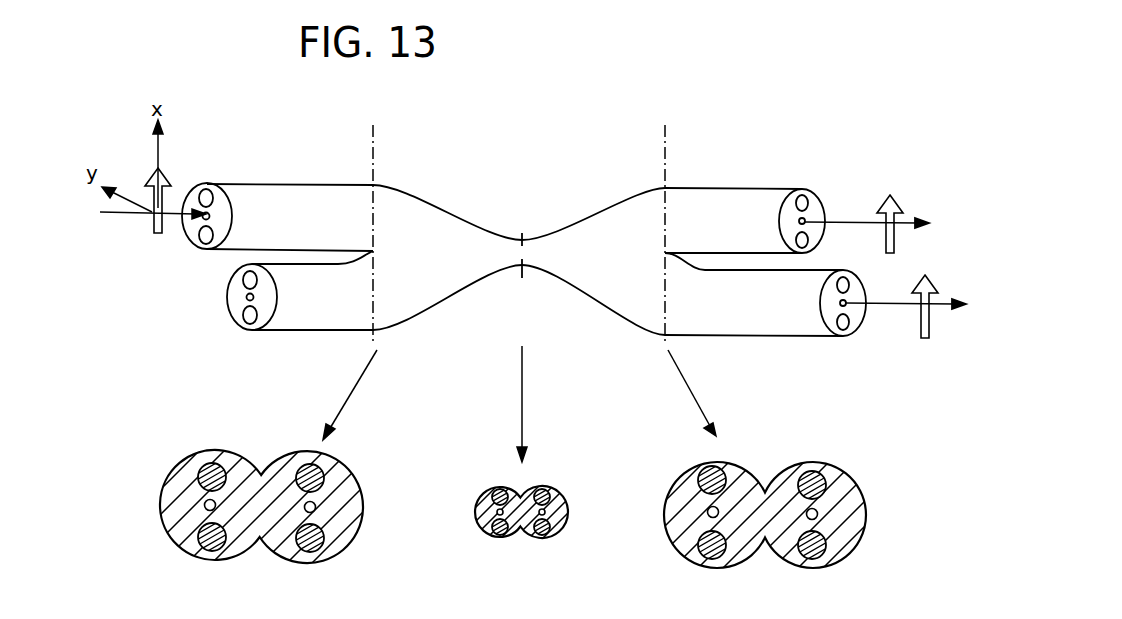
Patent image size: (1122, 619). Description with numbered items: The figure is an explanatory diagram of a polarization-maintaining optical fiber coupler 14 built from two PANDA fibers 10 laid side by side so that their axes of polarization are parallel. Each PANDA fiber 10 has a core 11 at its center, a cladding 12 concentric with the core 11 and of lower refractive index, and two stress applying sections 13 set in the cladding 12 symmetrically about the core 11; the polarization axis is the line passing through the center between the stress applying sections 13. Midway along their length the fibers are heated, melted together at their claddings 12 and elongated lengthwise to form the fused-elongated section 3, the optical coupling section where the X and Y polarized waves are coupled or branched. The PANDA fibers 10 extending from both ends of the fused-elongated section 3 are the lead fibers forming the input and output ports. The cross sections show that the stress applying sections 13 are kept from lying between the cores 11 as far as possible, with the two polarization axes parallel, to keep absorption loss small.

The fused-elongated section 3 is at (665, 143).
The PANDA fiber 10 is at (255, 183).
The core 11 is at (204, 218).
The cladding 12 is at (223, 218).
The stress applying sections 13 is at (206, 190).
The polarization-maintaining optical fiber coupler 14 is at (772, 168).